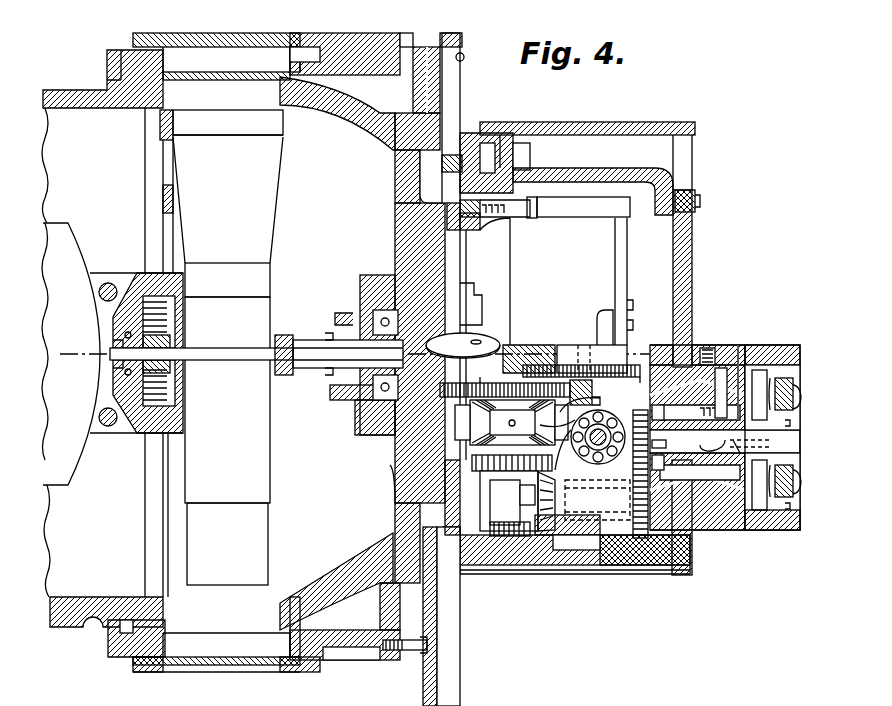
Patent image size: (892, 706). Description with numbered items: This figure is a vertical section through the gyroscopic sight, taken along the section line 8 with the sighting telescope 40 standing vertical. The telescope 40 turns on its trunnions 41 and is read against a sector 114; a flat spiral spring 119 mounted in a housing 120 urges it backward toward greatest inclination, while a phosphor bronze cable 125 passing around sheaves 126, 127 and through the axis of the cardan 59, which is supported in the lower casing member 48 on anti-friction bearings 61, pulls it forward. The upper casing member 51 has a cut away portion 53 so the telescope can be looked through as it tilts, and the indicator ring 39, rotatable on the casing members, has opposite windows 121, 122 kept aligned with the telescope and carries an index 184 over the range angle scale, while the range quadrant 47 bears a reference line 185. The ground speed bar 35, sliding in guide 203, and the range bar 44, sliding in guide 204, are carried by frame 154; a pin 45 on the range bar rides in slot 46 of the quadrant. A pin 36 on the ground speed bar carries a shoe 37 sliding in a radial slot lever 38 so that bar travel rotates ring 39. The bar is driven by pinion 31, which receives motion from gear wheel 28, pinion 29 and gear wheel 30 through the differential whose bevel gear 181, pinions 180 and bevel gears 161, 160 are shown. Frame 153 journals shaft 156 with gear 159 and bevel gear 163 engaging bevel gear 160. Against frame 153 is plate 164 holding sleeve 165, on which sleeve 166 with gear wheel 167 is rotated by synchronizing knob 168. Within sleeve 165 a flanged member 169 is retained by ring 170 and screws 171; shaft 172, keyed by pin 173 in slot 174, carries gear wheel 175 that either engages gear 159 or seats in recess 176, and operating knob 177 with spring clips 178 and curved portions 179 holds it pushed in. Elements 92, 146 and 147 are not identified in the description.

The axis line 8 is at (60, 354).
The bevel gear 28 is at (612, 395).
The pinion 29 is at (592, 388).
The gear wheel 30 is at (458, 406).
The pinion 31 is at (575, 560).
The ground speed bar 35 is at (480, 567).
The pin 36 is at (447, 527).
The shoe 37 is at (452, 553).
The radial slot lever 38 is at (460, 655).
The indicator ring 39 is at (348, 647).
The sighting telescope 40 is at (278, 205).
The trunnions 41 is at (272, 345).
The range bar 44 is at (474, 133).
The pin 45 is at (442, 165).
The slot 46 is at (460, 105).
The range quadrant 47 is at (465, 57).
The lower casing member 48 is at (330, 580).
The upper casing member 51 is at (362, 135).
The cut away portion 53 is at (232, 95).
The cardan 59 is at (330, 280).
The anti-friction bearings 61 is at (375, 322).
The ball bearing 92 is at (571, 437).
The sector 114 is at (160, 125).
The flat spiral spring 119 is at (168, 316).
The housing 120 is at (120, 313).
The window 121 is at (228, 52).
The window 122 is at (243, 640).
The phosphor bronze cable 125 is at (460, 365).
The sheave 126 is at (457, 336).
The sheave 127 is at (308, 340).
The gear 146 is at (557, 429).
The gear 147 is at (594, 408).
The frame 153 is at (590, 168).
The frame 154 is at (502, 272).
The shaft 156 is at (633, 460).
The gear 159 is at (640, 545).
The bevel gear 160 is at (598, 464).
The bevel gear 161 is at (470, 442).
The bevel gear 163 is at (597, 500).
The plate 164 is at (692, 303).
The sleeve 165 is at (688, 532).
The sleeve 166 is at (722, 365).
The gear wheel 167 is at (660, 345).
The synchronizing knob 168 is at (740, 345).
The member 169 is at (725, 437).
The ring 170 is at (756, 449).
The screws 171 is at (748, 440).
The shaft 172 is at (664, 462).
The pin 173 is at (717, 441).
The slot 174 is at (760, 446).
The gear wheel 175 is at (664, 411).
The recess 176 is at (664, 441).
The operating knob 177 is at (780, 345).
The spring clips 178 is at (795, 410).
The curved portions 179 is at (776, 437).
The pinions 180 is at (470, 423).
The bevel gear 181 is at (500, 383).
The index 184 is at (418, 40).
The reference line 185 is at (462, 38).
The guide 203 is at (522, 575).
The guide 204 is at (510, 122).